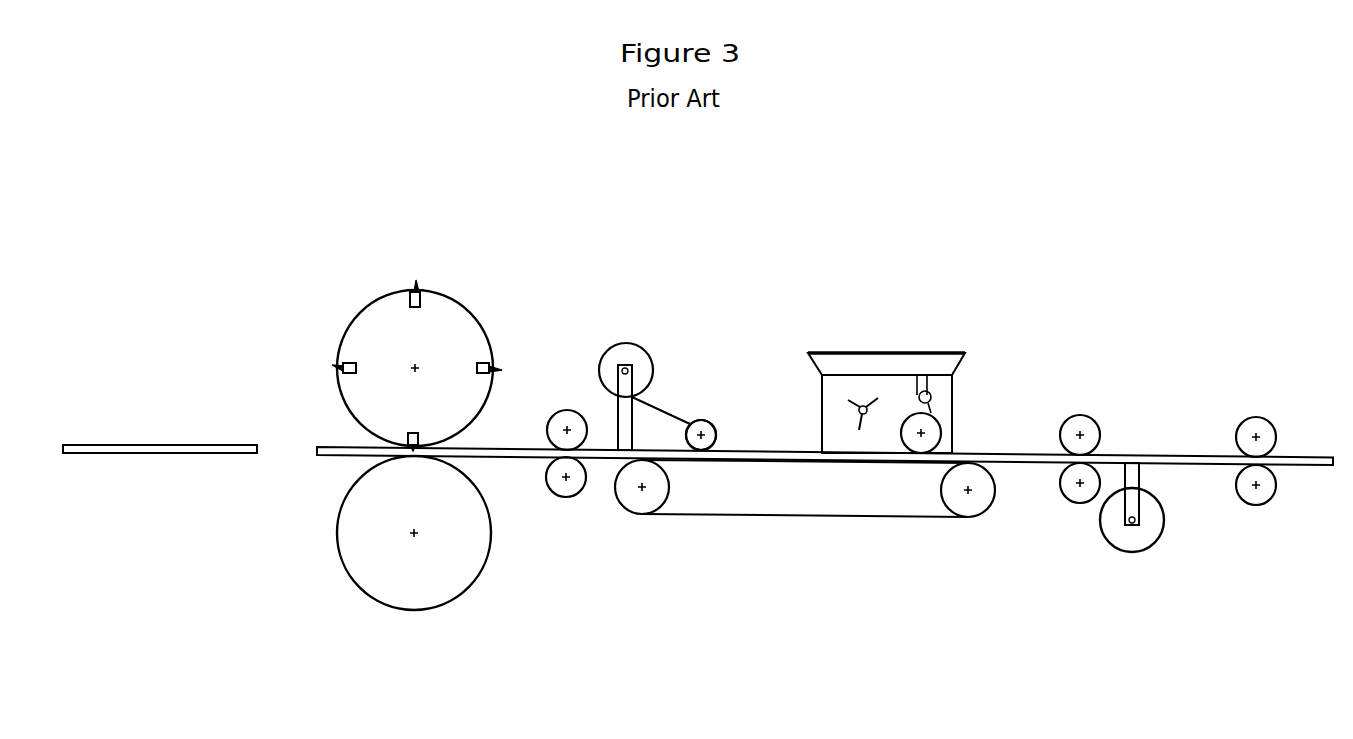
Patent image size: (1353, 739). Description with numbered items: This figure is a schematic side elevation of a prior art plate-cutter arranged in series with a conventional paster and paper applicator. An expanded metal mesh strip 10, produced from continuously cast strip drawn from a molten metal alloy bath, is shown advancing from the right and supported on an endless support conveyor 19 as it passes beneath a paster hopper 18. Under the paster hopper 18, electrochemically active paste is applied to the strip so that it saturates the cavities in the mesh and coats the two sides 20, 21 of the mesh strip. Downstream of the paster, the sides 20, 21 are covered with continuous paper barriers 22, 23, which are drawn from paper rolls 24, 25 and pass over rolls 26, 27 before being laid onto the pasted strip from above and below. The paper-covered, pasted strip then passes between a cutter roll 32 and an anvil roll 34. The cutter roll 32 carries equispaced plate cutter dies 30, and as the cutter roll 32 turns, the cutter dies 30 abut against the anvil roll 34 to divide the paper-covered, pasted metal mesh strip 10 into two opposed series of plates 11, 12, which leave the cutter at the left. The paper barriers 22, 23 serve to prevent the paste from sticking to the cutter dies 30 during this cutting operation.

The expanded metal mesh strip 10 is at (1178, 455).
The plate 11 is at (98, 445).
The plate 12 is at (160, 449).
The paster hopper 18 is at (953, 390).
The endless support conveyor 19 is at (725, 517).
The side of the mesh strip 20 is at (1133, 455).
The side of the mesh strip 21 is at (1203, 465).
The continuous paper barrier 22 is at (523, 457).
The continuous paper barrier 23 is at (497, 450).
The paper roll 24 is at (1147, 548).
The paper roll 25 is at (622, 345).
The roll 26 is at (1072, 500).
The roll 27 is at (715, 428).
The plate cutter die 30 is at (418, 280).
The cutter roll 32 is at (367, 325).
The anvil roll 34 is at (452, 582).